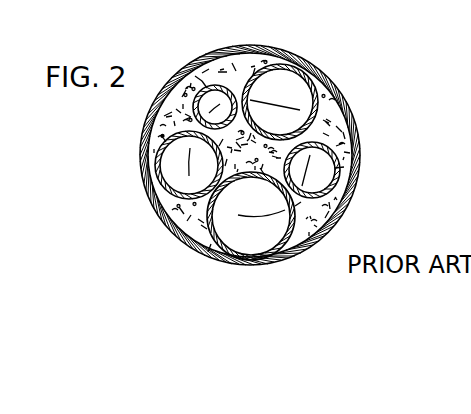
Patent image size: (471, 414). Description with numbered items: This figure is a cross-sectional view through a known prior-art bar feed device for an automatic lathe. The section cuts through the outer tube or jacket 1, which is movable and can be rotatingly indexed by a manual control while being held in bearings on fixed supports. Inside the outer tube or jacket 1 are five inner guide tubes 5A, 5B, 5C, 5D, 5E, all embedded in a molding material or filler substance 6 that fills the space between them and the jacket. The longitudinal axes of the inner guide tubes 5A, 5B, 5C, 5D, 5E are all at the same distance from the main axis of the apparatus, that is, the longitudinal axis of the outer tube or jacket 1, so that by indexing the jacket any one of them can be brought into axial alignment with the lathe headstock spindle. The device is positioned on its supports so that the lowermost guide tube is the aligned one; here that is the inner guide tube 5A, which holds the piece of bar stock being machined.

The outer tube or jacket 1 is at (254, 50).
The inner guide tube 5A is at (232, 255).
The inner guide tube 5B is at (160, 167).
The inner guide tube 5C is at (201, 90).
The inner guide tube 5D is at (308, 78).
The inner guide tube 5E is at (337, 165).
The molding material or filler substance 6 is at (323, 117).